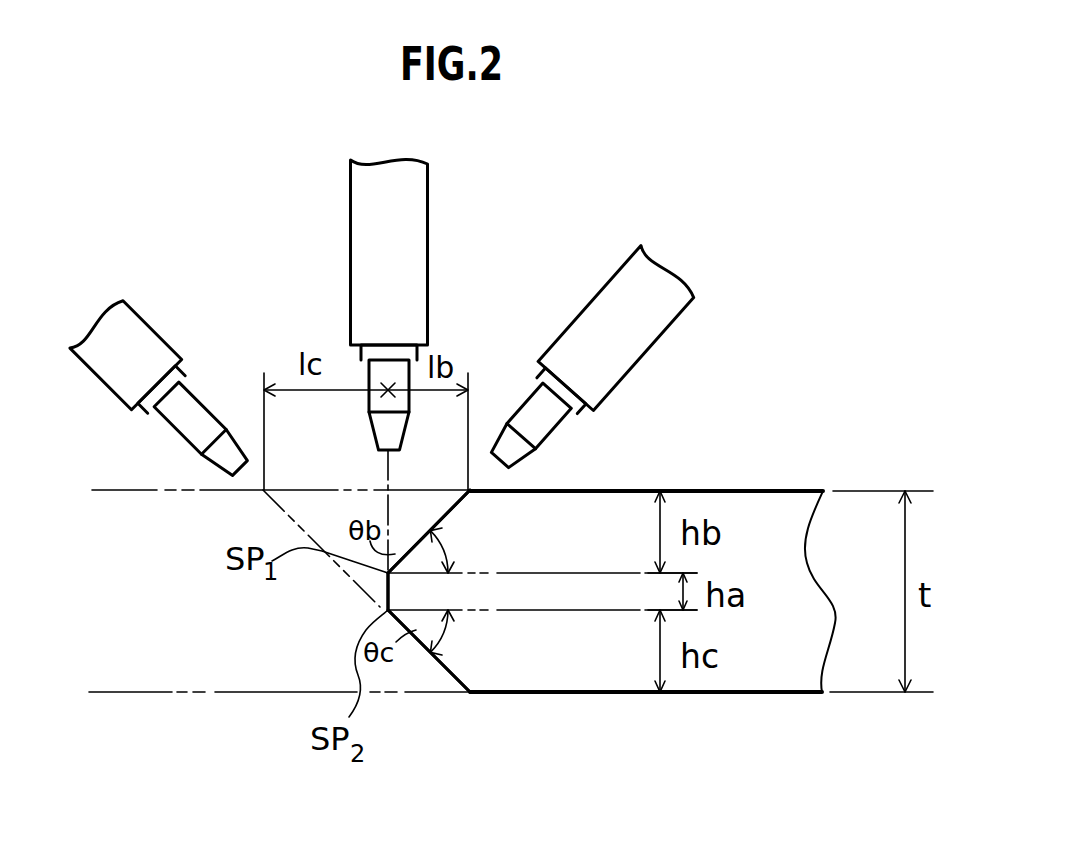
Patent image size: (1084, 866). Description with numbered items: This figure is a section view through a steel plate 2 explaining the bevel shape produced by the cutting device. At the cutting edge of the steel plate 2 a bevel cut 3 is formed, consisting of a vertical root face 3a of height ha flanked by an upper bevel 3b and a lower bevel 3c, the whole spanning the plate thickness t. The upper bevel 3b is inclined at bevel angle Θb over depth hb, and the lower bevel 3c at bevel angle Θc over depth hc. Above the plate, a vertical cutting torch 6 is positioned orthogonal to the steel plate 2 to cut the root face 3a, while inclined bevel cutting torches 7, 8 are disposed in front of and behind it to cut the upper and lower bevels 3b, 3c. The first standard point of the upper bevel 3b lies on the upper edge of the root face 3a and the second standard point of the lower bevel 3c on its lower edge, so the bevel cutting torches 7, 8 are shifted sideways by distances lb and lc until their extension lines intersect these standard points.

The steel plate 2 is at (777, 505).
The bevel cut 3 is at (335, 607).
The root face 3a is at (387, 592).
The upper bevel 3b is at (450, 515).
The lower bevel 3c is at (455, 675).
The vertical cutting torch 6 is at (379, 428).
The bevel cutting torch 7 is at (540, 424).
The bevel cutting torch 8 is at (191, 427).